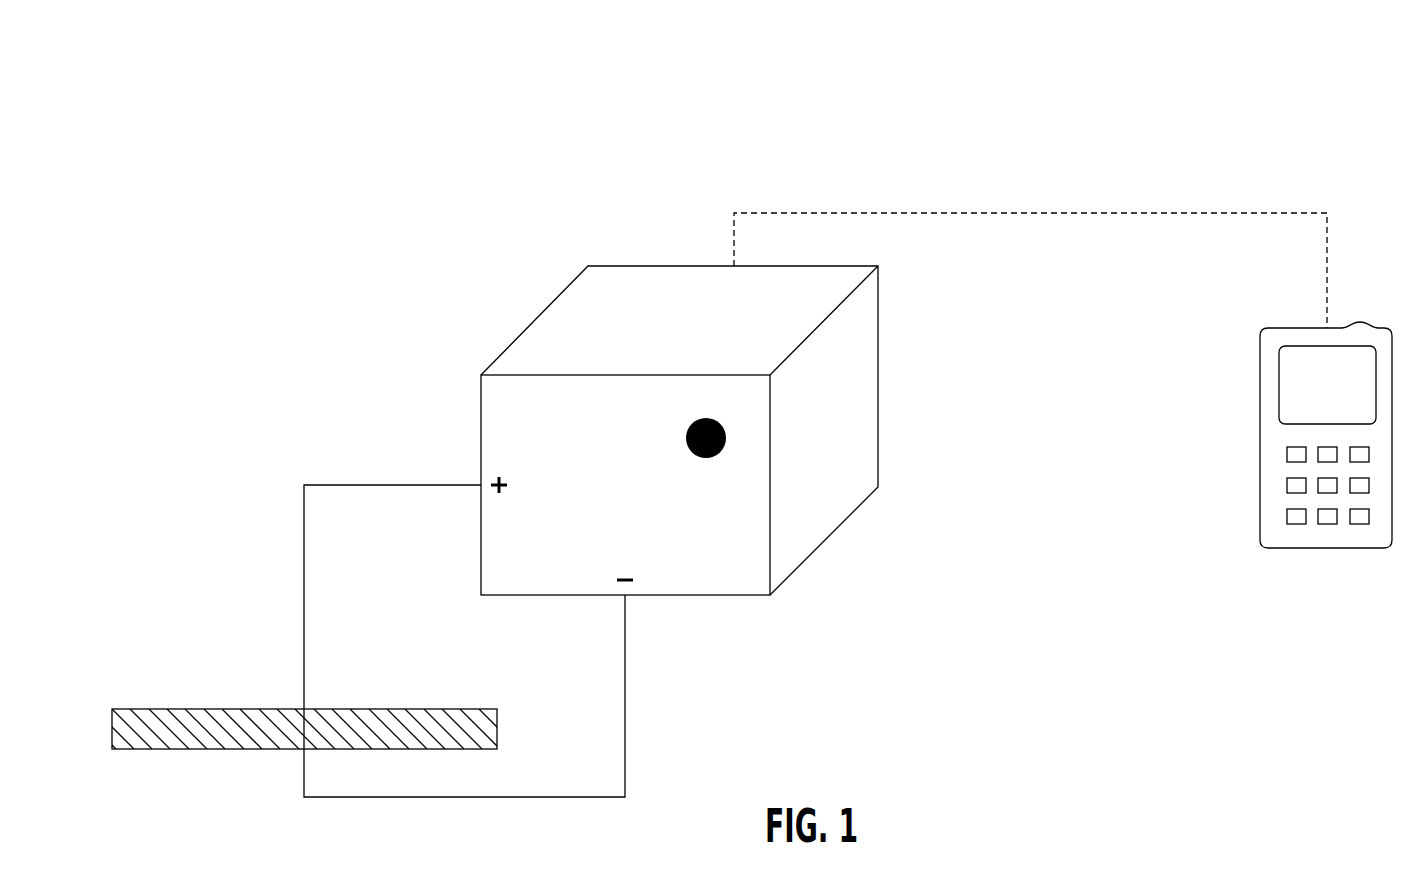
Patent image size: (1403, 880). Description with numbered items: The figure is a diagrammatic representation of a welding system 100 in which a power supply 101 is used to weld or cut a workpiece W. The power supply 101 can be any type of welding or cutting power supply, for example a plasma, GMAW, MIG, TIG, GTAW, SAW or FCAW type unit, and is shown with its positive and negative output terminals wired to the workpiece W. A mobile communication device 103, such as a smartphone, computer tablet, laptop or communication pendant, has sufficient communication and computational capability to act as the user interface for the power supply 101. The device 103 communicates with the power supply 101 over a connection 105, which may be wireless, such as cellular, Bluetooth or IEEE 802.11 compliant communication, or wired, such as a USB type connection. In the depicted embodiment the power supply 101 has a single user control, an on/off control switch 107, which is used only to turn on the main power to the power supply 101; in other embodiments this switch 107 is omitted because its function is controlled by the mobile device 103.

The welding system 100 is at (1210, 112).
The power supply 101 is at (540, 315).
The mobile communication device 103 is at (1323, 482).
The connection 105 is at (940, 213).
The on/off control switch 107 is at (727, 439).
The workpiece W is at (428, 749).